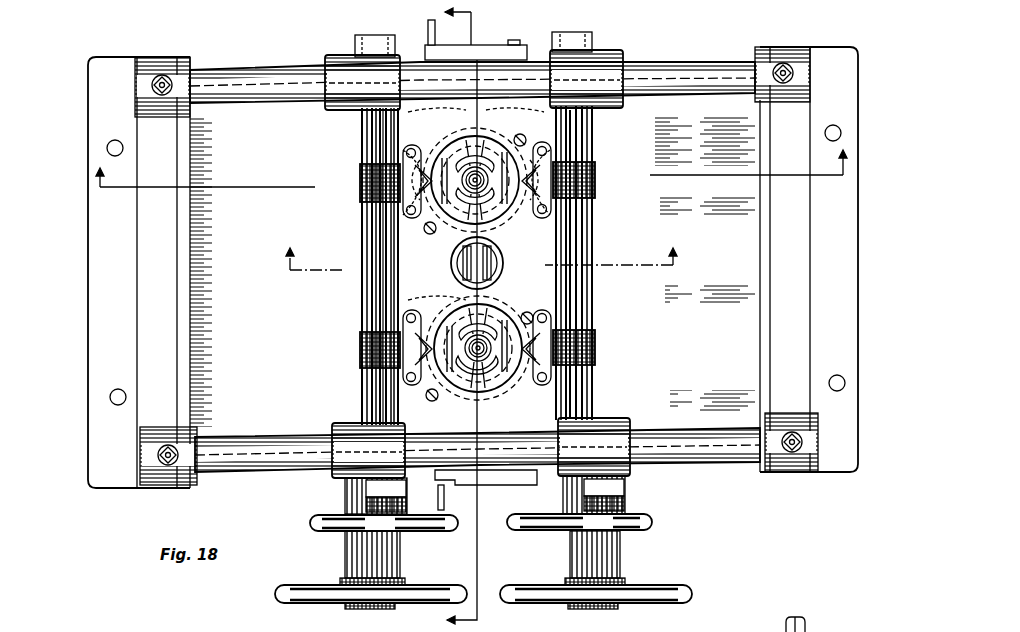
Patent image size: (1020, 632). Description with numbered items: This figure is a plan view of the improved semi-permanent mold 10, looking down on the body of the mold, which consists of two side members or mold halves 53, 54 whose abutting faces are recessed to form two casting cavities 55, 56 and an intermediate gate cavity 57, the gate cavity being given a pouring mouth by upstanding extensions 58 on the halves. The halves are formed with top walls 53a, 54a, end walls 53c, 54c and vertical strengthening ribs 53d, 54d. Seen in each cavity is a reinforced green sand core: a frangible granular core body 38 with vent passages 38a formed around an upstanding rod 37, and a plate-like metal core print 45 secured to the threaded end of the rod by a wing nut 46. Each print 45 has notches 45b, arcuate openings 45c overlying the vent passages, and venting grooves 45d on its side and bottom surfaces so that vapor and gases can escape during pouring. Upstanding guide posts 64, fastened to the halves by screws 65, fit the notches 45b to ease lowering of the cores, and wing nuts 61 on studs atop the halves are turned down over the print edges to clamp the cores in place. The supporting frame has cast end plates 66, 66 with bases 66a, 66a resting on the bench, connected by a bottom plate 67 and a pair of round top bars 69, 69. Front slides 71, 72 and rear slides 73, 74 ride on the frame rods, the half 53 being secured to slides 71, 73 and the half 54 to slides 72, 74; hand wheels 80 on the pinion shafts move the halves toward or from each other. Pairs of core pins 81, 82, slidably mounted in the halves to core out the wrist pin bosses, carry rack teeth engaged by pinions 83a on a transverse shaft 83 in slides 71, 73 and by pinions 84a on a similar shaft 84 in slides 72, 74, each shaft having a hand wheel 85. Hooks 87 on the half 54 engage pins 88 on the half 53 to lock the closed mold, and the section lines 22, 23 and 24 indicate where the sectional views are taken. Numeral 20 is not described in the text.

The mold 10 is at (670, 62).
The shaft 20 is at (498, 312).
The boss 22 is at (443, 318).
The finger extension 23 is at (471, 168).
The section line 24- 24 is at (483, 249).
The rod 37 is at (468, 347).
The core body 38 is at (470, 140).
The vent passage 38a is at (484, 140).
The core print 45 is at (502, 224).
The notch 45b is at (420, 200).
The arcuate opening 45c is at (458, 162).
The venting groove 45d is at (492, 266).
The wing nut 46 is at (490, 347).
The mold half 53 is at (382, 290).
The top wall 53a is at (380, 324).
The end wall 53c is at (365, 128).
The vertical strengthening rib 53d is at (366, 241).
The mold half 54 is at (592, 280).
The top wall 54a is at (592, 208).
The end wall 54c is at (594, 120).
The vertical strengthening rib 54d is at (592, 246).
The casting cavity 55 is at (360, 356).
The casting cavity 56 is at (362, 169).
The gate cavity 57 is at (382, 272).
The upstanding extension 58 is at (460, 268).
The wing nut 61 is at (520, 136).
The guide post 64 is at (365, 188).
The screw 65 is at (365, 149).
The end plate 66 is at (156, 266).
The base 66a is at (115, 482).
The bottom plate 67 is at (705, 402).
The top bar 69 is at (230, 104).
The slide 71 is at (334, 480).
The slide 72 is at (631, 470).
The slide 73 is at (355, 45).
The slide 74 is at (594, 50).
The hand wheel 80 is at (290, 586).
The core pin 81 is at (360, 342).
The core pin 82 is at (618, 332).
The transverse shaft 83 is at (378, 310).
The pinion 83a is at (362, 366).
The shaft 84 is at (592, 258).
The pinion 84a is at (625, 362).
The hand wheel 85 is at (310, 522).
The hook 87 is at (498, 46).
The pin 88 is at (436, 42).